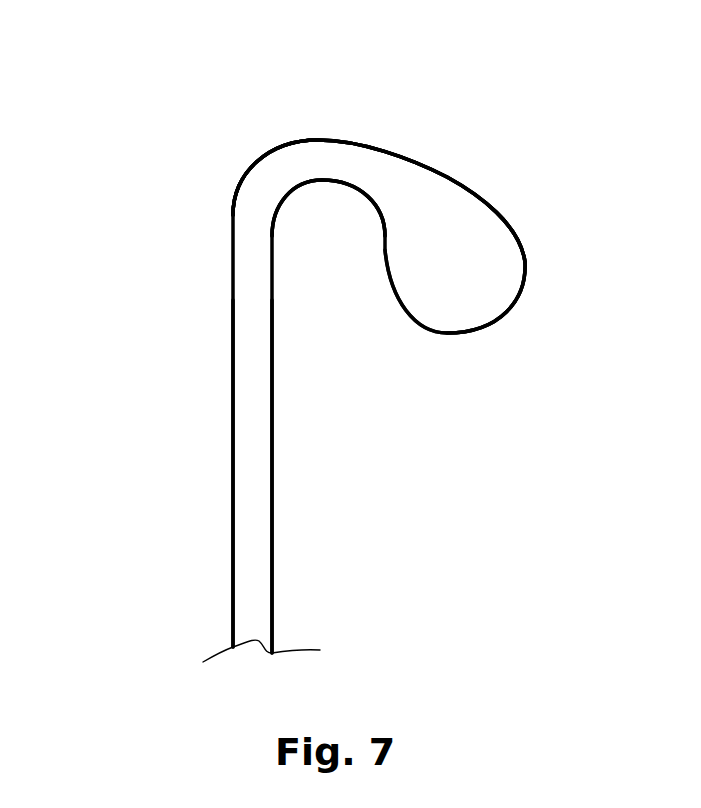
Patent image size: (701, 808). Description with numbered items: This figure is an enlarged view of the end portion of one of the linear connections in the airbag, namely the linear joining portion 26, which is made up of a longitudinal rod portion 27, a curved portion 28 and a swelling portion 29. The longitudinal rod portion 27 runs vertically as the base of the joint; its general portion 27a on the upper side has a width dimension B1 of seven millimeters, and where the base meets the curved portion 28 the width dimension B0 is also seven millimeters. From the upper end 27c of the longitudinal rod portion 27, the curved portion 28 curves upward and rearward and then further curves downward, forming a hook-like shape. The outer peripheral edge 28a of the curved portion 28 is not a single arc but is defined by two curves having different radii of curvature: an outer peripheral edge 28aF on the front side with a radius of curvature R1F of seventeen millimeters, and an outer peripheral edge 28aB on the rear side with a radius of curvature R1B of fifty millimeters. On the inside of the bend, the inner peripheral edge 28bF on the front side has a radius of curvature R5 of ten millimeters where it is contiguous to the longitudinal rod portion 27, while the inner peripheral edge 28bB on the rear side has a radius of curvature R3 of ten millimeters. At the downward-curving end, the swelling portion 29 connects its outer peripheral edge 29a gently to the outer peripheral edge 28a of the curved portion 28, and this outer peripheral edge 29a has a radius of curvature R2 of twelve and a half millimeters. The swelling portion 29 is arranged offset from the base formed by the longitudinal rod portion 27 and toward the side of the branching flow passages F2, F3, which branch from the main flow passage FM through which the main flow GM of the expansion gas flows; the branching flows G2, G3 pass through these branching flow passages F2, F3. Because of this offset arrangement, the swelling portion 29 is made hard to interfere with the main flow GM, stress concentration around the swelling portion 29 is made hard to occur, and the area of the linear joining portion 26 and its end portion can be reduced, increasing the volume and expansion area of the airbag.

The linear joining portion 26 is at (135, 348).
The longitudinal rod portion 27 is at (215, 584).
The general portion 27a is at (250, 542).
The upper end 27c is at (238, 200).
The curved portion 28 is at (315, 165).
The outer peripheral edge 28a is at (349, 135).
The outer peripheral edge on a front side 28aF is at (280, 146).
The outer peripheral edge on a rear side 28aB is at (460, 183).
The inner peripheral edge 28bF is at (290, 195).
The inner peripheral edge 28bB is at (354, 184).
The swelling portion 29 is at (473, 310).
The outer peripheral edge 29a is at (527, 263).
The radius of curvature R1F is at (278, 183).
The radius of curvature R1B is at (398, 197).
The radius of curvature R2 is at (457, 267).
The radius of curvature R3 is at (380, 206).
The radius of curvature R5 is at (280, 207).
The width dimension B0 is at (297, 232).
The width dimension B1 is at (323, 471).
The main flow passage FM is at (340, 118).
The main flow GM is at (640, 136).
The branching flow G2 is at (130, 122).
The branching flow G3 is at (644, 208).
The branching flow passage F2 is at (168, 211).
The branching flow passage F3 is at (554, 302).